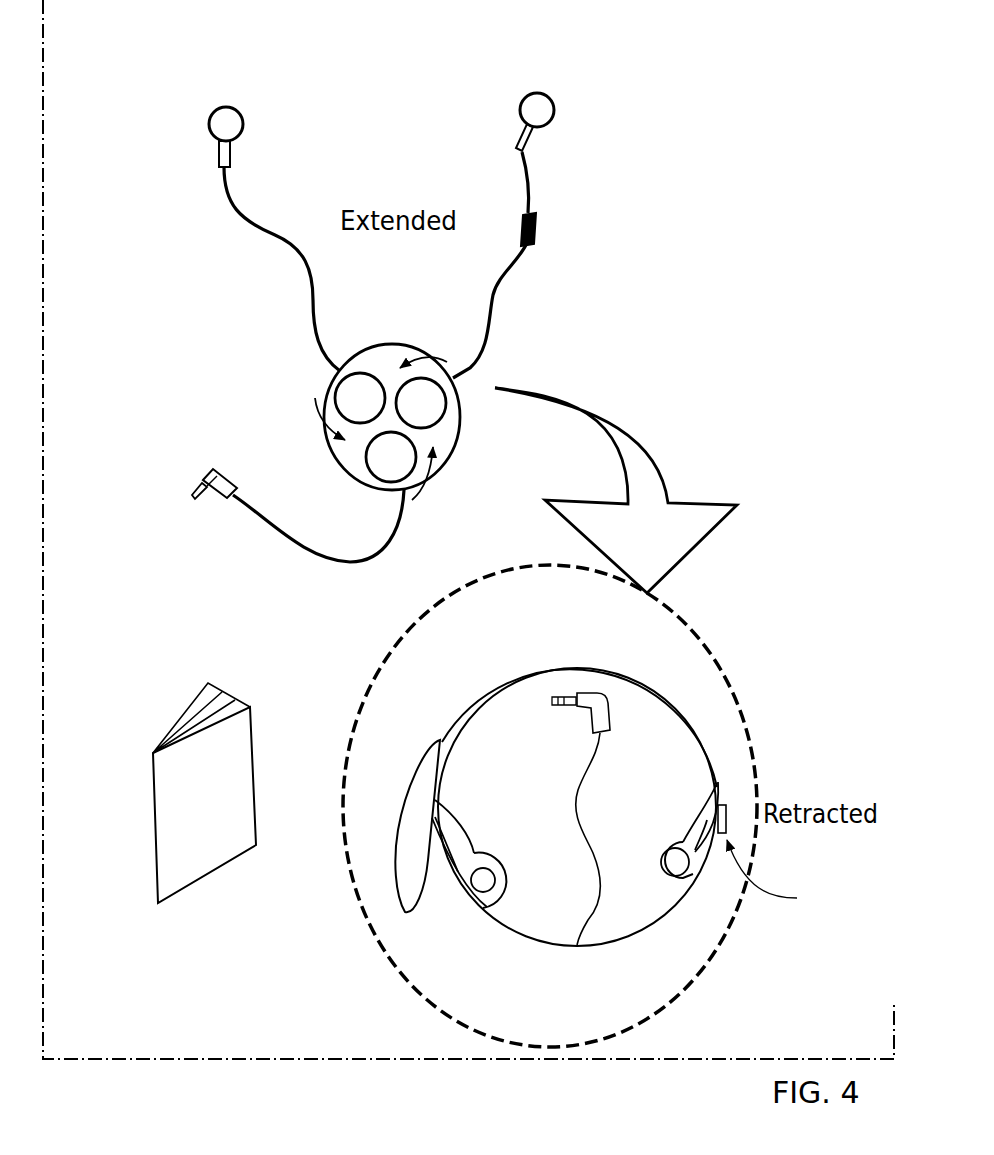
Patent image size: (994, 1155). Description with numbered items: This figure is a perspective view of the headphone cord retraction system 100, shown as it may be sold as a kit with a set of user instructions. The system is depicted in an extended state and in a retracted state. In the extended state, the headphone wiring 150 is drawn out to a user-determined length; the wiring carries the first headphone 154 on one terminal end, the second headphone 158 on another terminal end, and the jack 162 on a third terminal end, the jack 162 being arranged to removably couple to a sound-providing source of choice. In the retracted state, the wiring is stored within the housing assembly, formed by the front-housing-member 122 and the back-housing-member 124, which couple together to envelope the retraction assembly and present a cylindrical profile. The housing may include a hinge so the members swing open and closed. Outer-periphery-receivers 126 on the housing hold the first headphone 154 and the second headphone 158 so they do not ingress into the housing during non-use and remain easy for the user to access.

The headphone cord retraction system 100 is at (697, 120).
The second headphone 158 is at (230, 100).
The first headphone 154 is at (541, 90).
The headphone wiring 150 is at (323, 557).
The jack 162 is at (193, 502).
The back-housing-member 124 is at (522, 672).
The front-housing-member 122 is at (657, 790).
The outer-periphery-receivers 126 is at (493, 905).